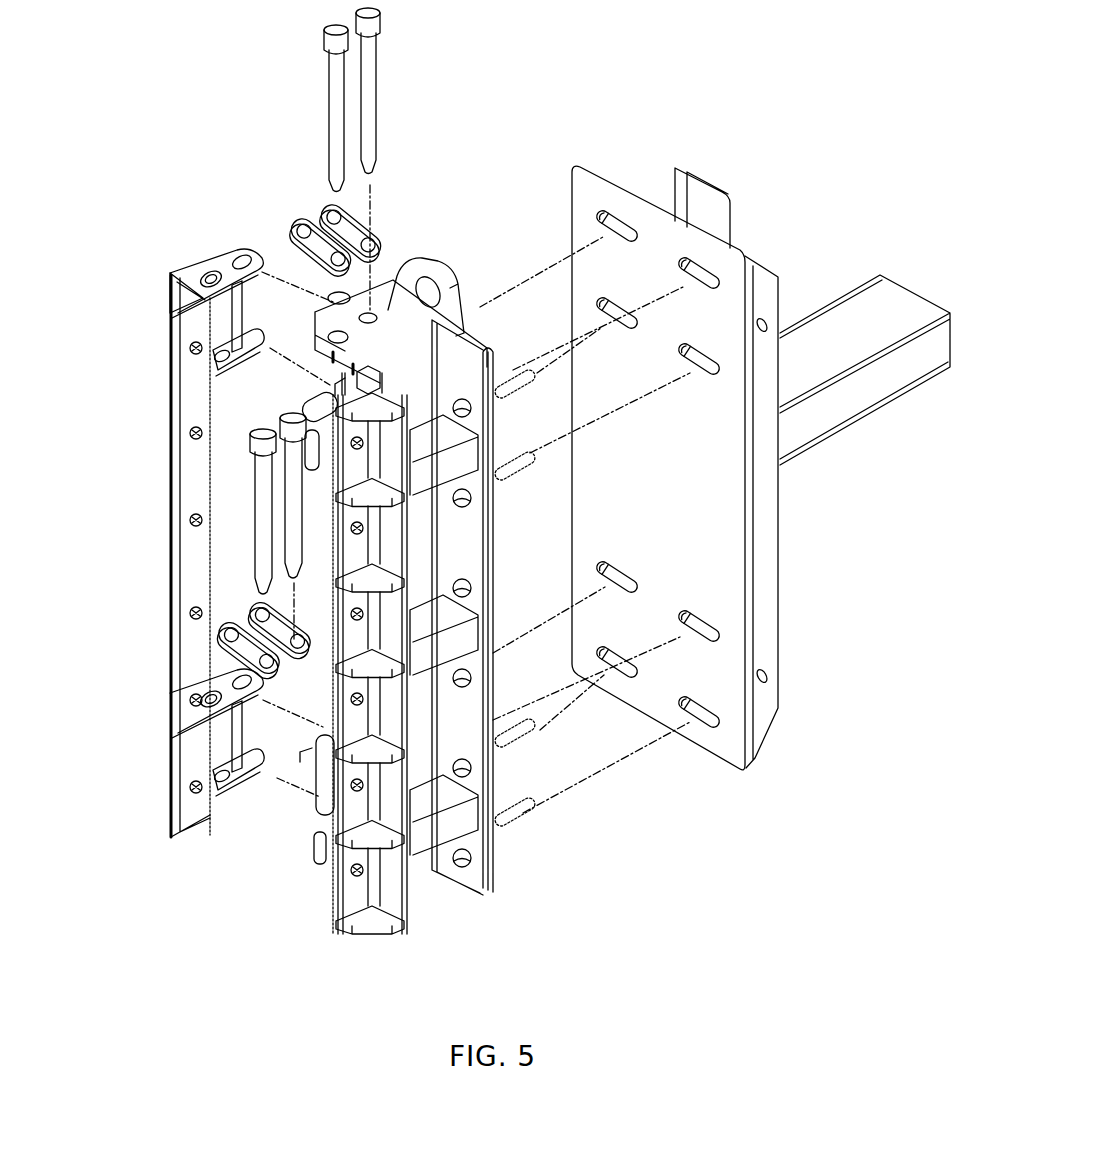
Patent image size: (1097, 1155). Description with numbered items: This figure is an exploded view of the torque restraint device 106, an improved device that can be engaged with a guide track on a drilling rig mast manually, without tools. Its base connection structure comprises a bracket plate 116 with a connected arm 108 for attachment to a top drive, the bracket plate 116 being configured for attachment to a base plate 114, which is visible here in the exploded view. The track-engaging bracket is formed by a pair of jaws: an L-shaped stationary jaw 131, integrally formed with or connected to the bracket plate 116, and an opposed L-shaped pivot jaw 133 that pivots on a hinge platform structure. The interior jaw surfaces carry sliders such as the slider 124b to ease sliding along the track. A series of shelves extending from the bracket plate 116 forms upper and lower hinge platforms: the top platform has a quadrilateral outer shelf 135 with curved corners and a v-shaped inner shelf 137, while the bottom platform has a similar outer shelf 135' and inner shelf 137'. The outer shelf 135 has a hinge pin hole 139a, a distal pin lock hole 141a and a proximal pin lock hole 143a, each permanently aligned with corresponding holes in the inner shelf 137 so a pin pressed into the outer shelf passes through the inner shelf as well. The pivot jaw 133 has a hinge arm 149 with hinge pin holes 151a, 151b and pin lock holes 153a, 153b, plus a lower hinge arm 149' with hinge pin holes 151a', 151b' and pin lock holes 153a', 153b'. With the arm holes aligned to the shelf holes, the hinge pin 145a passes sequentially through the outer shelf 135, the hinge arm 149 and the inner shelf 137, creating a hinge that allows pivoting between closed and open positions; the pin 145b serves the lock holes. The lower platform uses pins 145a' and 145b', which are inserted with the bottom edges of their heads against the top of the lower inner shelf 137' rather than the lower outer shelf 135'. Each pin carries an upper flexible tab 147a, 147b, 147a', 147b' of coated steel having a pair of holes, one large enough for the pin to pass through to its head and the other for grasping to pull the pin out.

The torque restraint device 106 is at (803, 152).
The arm 108 is at (845, 413).
The base plate 114 is at (666, 242).
The bracket plate 116 is at (473, 882).
The slider 124b is at (198, 810).
The stationary jaw 131 is at (365, 902).
The pivot jaw 133 is at (175, 301).
The outer shelf 135 is at (429, 337).
The lower outer shelf 135' is at (280, 862).
The inner shelf 137 is at (280, 429).
The lower inner shelf 137' is at (277, 778).
The hinge pin hole 139a is at (377, 325).
The distal pin lock hole 141a is at (333, 302).
The proximal pin lock hole 143a is at (337, 340).
The hinge pin 145a is at (435, 91).
The pin 145b is at (267, 108).
The lower hinge pin 145a' is at (167, 511).
The lower pin 145b' is at (176, 525).
The flexible tab 147a is at (393, 202).
The flexible tab 147b is at (268, 209).
The flexible tab 147a' is at (164, 673).
The flexible tab 147b' is at (185, 637).
The hinge arm 149 is at (160, 343).
The lower hinge arm 149' is at (166, 740).
The hinge pin hole 151a is at (198, 252).
The hinge pin hole 151b is at (302, 369).
The hinge pin hole 151a' is at (250, 701).
The hinge pin hole 151b' is at (283, 745).
The pin lock hole 153a is at (153, 265).
The pin lock hole 153b is at (177, 381).
The pin lock hole 153a' is at (153, 723).
The pin lock hole 153b' is at (173, 776).